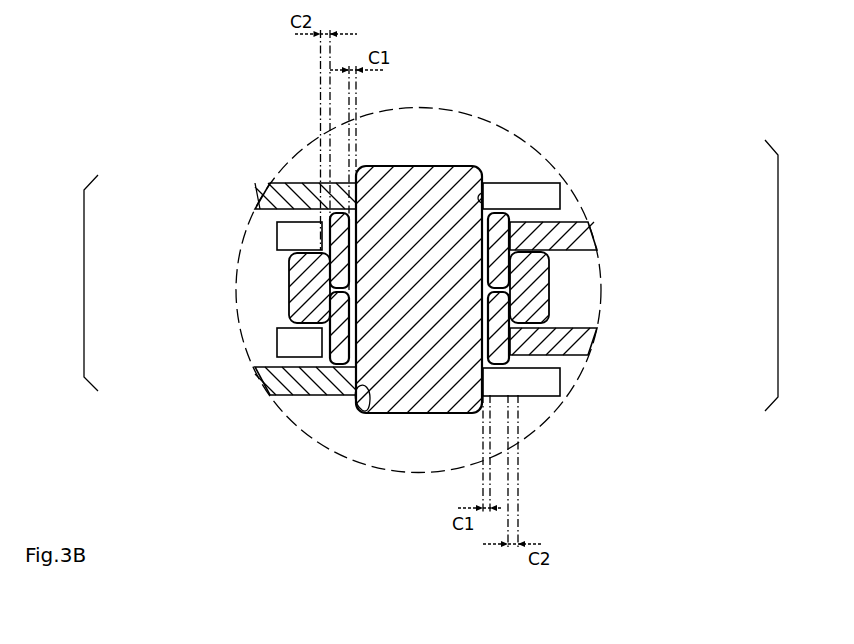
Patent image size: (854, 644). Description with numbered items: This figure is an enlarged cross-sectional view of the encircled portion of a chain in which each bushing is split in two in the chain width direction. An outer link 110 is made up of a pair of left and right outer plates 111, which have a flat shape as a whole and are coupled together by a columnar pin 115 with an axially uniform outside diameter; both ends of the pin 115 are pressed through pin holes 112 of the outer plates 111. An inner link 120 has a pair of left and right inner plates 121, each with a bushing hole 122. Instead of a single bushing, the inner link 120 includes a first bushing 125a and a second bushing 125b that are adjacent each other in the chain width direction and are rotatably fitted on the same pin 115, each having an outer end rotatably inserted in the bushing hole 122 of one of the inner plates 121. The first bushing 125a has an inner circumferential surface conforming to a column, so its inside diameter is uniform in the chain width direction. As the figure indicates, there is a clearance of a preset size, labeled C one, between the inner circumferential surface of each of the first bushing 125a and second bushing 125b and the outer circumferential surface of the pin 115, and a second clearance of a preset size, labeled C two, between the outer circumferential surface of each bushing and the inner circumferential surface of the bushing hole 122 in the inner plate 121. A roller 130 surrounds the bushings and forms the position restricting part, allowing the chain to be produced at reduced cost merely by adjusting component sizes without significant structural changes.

The outer link 110 is at (791, 275).
The outer plate 111 is at (560, 200).
The pin hole 112 is at (487, 197).
The pin 115 is at (467, 263).
The inner link 120 is at (73, 283).
The inner plate 121 is at (277, 239).
The bushing hole 122 is at (512, 210).
The first bushing 125a is at (289, 270).
The second bushing 125b is at (342, 312).
The roller 130 is at (530, 302).